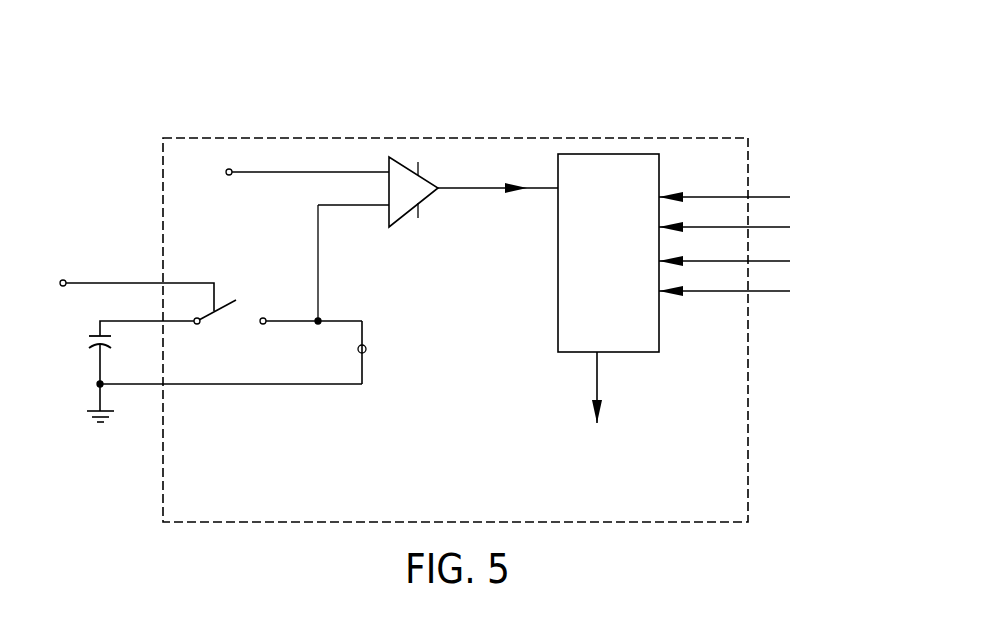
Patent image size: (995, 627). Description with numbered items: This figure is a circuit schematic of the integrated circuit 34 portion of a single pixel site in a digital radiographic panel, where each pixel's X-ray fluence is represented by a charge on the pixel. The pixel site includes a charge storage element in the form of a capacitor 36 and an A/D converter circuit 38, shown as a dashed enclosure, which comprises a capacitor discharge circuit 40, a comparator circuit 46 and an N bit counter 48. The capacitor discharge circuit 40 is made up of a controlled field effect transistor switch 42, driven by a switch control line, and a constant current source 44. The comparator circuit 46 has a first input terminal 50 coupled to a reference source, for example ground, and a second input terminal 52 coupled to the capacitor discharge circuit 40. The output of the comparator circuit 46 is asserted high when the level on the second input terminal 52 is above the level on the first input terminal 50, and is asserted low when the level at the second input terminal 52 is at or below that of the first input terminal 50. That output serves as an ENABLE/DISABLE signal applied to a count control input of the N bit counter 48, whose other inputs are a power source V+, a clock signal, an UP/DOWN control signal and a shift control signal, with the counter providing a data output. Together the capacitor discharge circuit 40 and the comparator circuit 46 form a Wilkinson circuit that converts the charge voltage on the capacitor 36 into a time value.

The integrated circuit 34 is at (164, 114).
The capacitor 36 is at (92, 337).
The A/D converter circuit 38 is at (528, 138).
The capacitor discharge circuit 40 is at (256, 380).
The controlled field effect transistor (FET) switch 42 is at (234, 300).
The constant current source 44 is at (367, 349).
The comparator circuit 46 is at (430, 180).
The N bit counter 48 is at (628, 157).
The first input terminal 50 is at (231, 169).
The second input terminal 52 is at (320, 318).